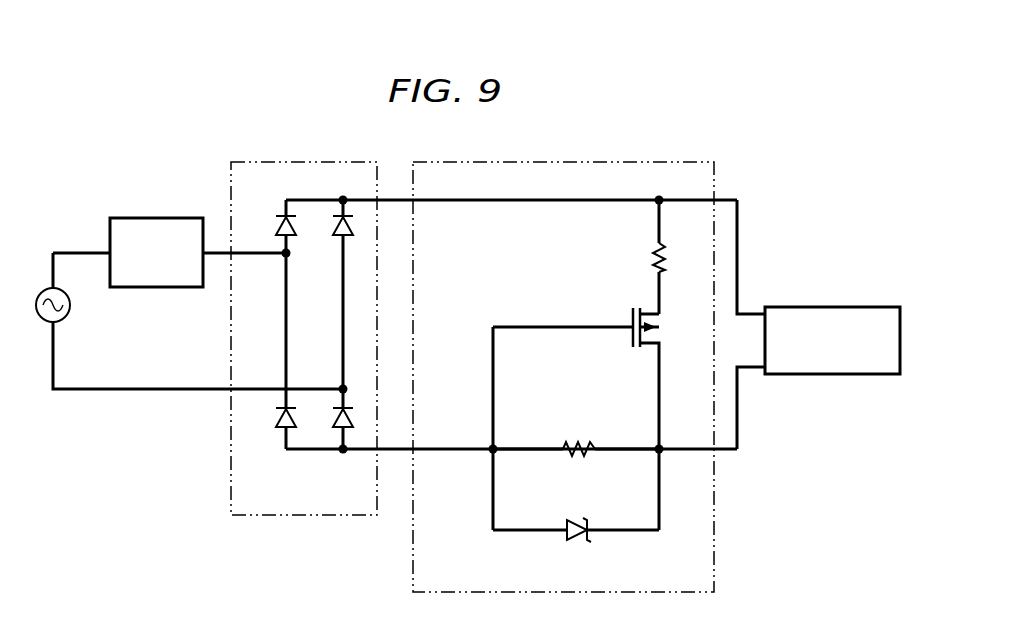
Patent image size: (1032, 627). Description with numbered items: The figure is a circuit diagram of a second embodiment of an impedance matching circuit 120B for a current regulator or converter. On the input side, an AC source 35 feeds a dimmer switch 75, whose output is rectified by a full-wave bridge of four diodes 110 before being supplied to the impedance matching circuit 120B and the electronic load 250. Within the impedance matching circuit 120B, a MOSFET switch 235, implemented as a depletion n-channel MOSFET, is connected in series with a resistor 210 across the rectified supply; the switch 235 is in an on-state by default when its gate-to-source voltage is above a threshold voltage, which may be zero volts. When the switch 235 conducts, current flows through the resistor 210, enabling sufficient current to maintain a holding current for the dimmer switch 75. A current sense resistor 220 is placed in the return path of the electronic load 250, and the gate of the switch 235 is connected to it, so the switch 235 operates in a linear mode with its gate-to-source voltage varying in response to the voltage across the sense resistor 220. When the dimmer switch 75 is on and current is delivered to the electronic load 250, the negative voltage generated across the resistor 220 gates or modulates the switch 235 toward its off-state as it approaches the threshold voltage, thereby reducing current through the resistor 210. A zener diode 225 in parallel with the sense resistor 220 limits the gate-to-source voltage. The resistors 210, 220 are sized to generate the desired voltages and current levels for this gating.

The AC power source 35 is at (61, 319).
The dimmer switch 75 is at (128, 218).
The full-wave rectifier bridge 110 is at (257, 162).
The impedance matching circuit 120B is at (683, 162).
The resistor 210 is at (650, 256).
The MOSFET switch 235 is at (632, 316).
The current sense resistor 220 is at (580, 460).
The zener diode 225 is at (577, 520).
The electronic load 250 is at (857, 307).